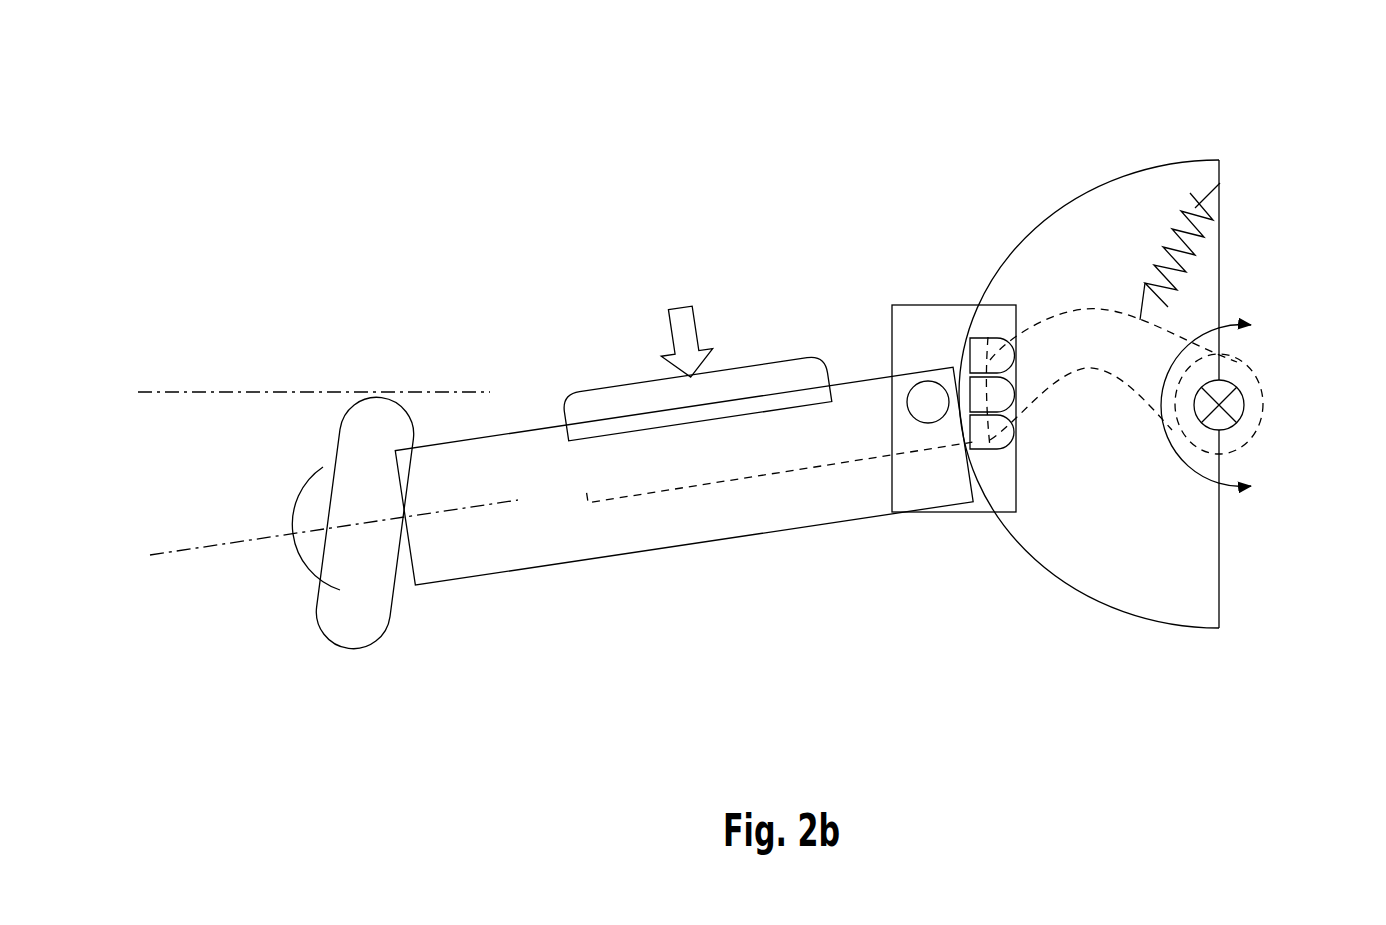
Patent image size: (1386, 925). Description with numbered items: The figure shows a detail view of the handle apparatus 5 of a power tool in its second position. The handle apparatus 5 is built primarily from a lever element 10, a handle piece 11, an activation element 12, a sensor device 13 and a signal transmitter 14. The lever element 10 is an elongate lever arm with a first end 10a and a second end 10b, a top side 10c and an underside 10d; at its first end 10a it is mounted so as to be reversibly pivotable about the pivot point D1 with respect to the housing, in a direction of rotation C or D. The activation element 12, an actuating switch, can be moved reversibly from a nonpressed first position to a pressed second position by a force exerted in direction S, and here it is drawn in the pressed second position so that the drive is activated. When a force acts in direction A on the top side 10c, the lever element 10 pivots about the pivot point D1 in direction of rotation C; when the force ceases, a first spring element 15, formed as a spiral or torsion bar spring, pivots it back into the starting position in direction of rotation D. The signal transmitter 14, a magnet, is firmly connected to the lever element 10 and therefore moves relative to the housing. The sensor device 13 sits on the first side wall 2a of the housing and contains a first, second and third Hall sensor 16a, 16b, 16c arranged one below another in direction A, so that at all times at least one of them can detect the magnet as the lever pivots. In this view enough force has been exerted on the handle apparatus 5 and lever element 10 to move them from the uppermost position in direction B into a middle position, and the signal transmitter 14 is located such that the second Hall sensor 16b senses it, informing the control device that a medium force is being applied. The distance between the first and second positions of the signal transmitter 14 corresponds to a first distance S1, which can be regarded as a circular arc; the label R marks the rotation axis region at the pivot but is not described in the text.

The handle apparatus 5 is at (381, 260).
The lever element 10 is at (667, 463).
The first end 10a is at (1252, 392).
The second end 10b is at (580, 442).
The top side 10c is at (598, 437).
The underside 10d is at (747, 480).
The handle piece 11 is at (442, 553).
The activation element 12 is at (762, 382).
The sensor device 13 is at (994, 303).
The signal transmitter 14 is at (914, 390).
The first spring element 15 is at (1178, 217).
The first Hall sensor 16a is at (987, 347).
The second Hall sensor 16b is at (993, 390).
The third Hall sensor 16c is at (990, 432).
The first side wall 2a is at (1083, 213).
The direction A is at (449, 181).
The direction B is at (467, 178).
The direction of rotation C is at (1265, 489).
The direction of rotation D is at (1217, 399).
The pivot point D1 is at (1231, 427).
The rotation axis R is at (1243, 405).
The direction S is at (686, 327).
The first distance S1 is at (142, 396).